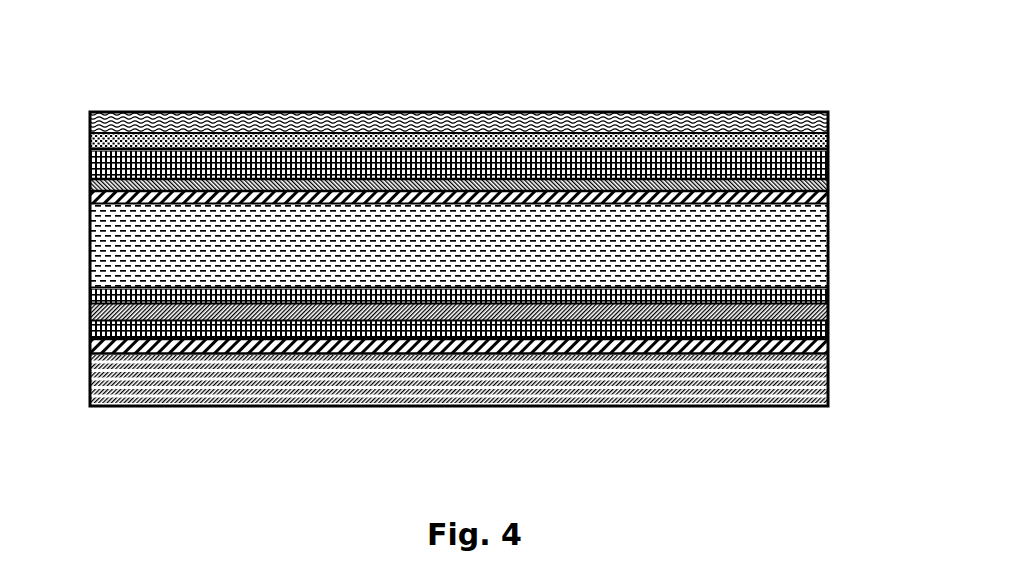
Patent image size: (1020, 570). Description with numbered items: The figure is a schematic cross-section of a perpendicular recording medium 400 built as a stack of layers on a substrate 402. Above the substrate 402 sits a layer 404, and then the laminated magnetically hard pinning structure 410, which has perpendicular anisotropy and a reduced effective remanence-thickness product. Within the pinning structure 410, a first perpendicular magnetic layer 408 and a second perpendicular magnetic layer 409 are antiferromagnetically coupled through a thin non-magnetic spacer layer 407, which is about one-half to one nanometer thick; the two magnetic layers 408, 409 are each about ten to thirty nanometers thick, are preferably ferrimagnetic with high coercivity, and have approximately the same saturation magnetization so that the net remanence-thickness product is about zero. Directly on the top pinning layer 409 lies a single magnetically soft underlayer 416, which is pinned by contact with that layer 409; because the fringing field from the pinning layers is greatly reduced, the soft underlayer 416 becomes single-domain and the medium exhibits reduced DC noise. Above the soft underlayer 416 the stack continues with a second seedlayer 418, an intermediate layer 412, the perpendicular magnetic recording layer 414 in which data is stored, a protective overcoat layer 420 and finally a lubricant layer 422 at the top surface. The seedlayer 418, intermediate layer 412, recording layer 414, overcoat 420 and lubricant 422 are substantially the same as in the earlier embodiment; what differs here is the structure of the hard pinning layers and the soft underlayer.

The perpendicular recording medium 400 is at (398, 92).
The substrate 402 is at (773, 407).
The first layer 404 is at (830, 344).
The non-magnetic spacer layer 407 is at (830, 311).
The first perpendicular magnetic layer 408 is at (830, 323).
The second perpendicular magnetic layer 409 is at (830, 293).
The laminated magnetically hard pinning structure 410 is at (88, 288).
The intermediate layer 412 is at (830, 183).
The perpendicular magnetic recording layer 414 is at (828, 166).
The magnetically soft underlayer 416 is at (830, 250).
The second seedlayer 418 is at (830, 195).
The overcoat layer 420 is at (828, 138).
The lubricant layer 422 is at (766, 112).